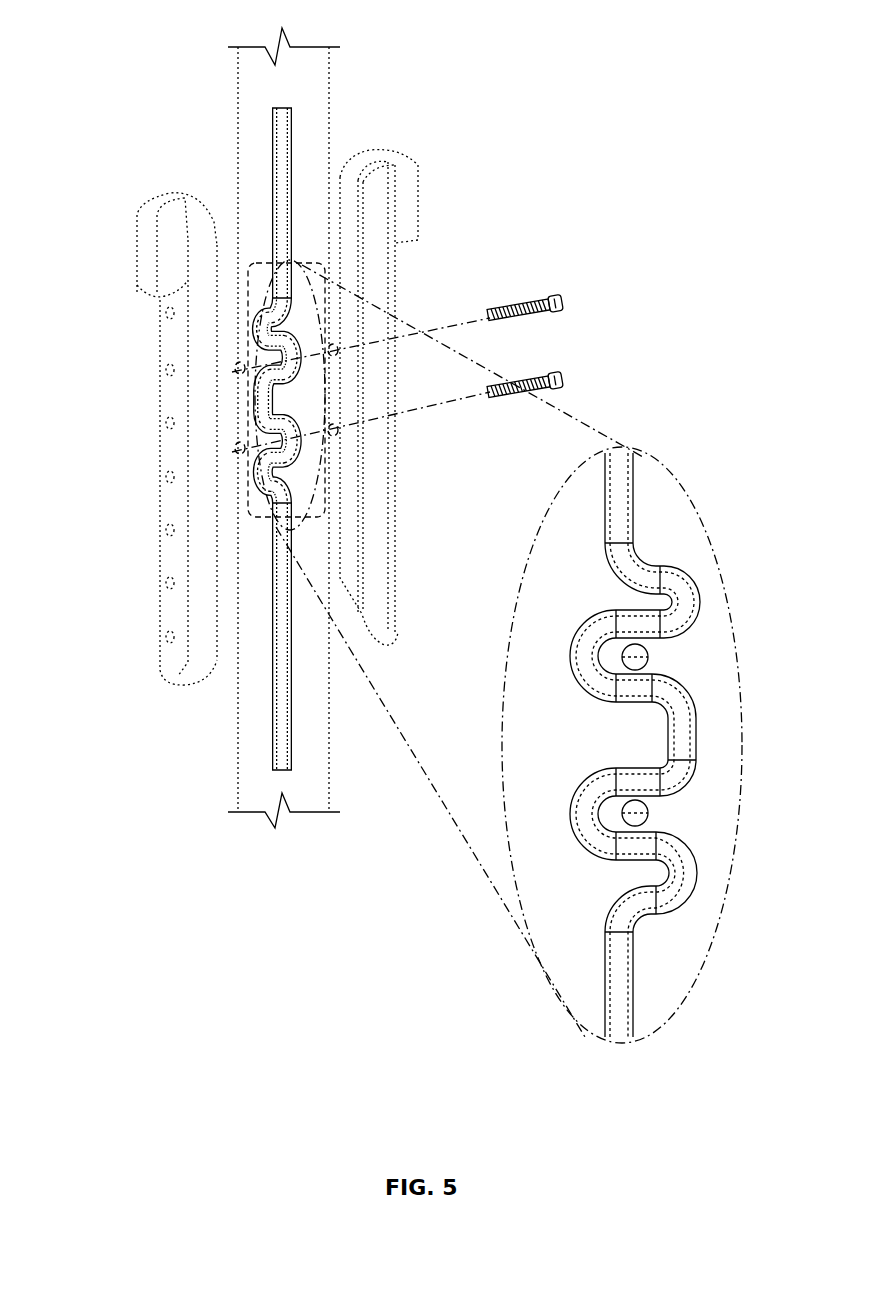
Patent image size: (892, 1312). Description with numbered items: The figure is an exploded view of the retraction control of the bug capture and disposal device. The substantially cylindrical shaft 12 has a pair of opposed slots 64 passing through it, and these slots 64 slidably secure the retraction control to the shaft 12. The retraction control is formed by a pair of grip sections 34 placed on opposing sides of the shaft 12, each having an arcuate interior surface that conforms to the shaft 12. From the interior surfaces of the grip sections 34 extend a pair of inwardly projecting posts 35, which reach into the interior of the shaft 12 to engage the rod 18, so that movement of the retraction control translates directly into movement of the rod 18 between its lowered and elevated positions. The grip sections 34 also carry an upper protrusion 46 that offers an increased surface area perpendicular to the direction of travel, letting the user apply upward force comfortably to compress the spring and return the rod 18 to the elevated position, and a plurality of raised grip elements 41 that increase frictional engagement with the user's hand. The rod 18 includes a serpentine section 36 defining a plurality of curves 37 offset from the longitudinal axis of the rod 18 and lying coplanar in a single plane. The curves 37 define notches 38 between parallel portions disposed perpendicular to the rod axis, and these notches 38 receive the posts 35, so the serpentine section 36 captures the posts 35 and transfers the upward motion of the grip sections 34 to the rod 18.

The shaft 12 is at (330, 108).
The rod 18 is at (623, 485).
The grip sections 34 is at (397, 273).
The posts 35 is at (350, 340).
The serpentine section 36 is at (752, 481).
The curves 37 is at (700, 595).
The notches 38 is at (610, 655).
The raised grip elements 41 is at (168, 532).
The upper protrusion 46 is at (124, 248).
The slots 64 is at (250, 293).